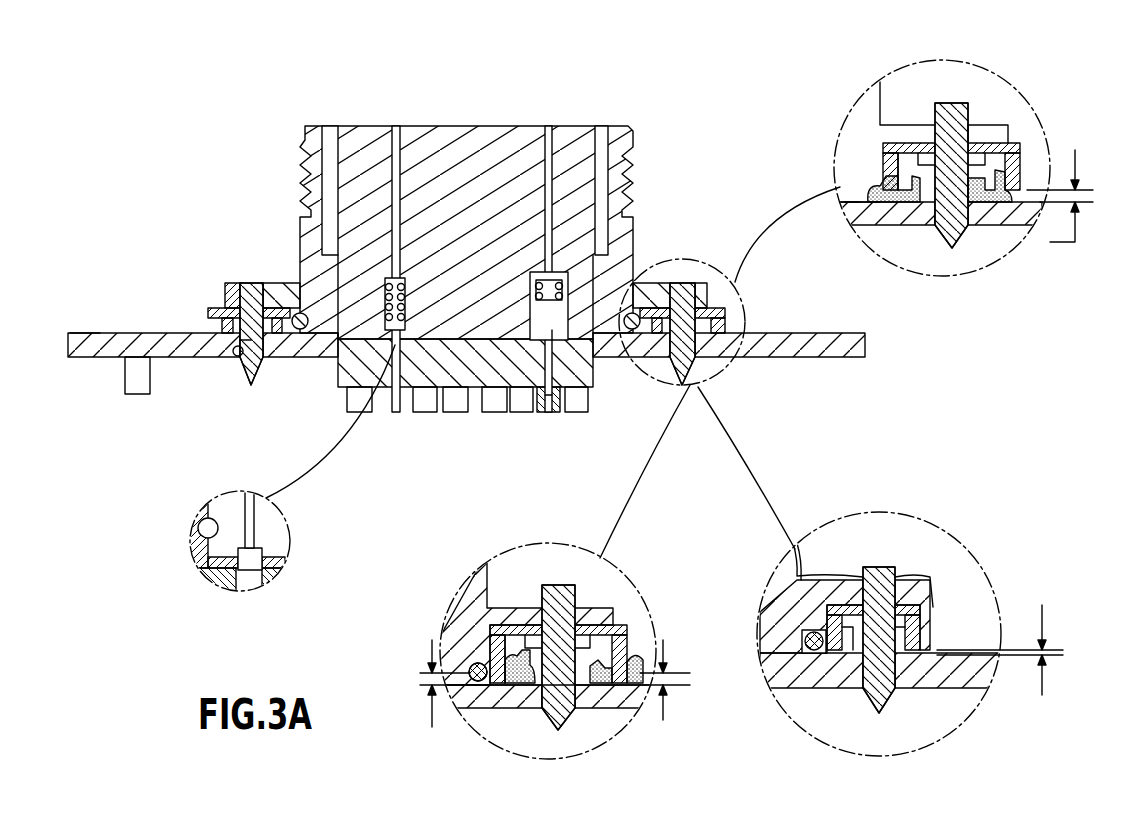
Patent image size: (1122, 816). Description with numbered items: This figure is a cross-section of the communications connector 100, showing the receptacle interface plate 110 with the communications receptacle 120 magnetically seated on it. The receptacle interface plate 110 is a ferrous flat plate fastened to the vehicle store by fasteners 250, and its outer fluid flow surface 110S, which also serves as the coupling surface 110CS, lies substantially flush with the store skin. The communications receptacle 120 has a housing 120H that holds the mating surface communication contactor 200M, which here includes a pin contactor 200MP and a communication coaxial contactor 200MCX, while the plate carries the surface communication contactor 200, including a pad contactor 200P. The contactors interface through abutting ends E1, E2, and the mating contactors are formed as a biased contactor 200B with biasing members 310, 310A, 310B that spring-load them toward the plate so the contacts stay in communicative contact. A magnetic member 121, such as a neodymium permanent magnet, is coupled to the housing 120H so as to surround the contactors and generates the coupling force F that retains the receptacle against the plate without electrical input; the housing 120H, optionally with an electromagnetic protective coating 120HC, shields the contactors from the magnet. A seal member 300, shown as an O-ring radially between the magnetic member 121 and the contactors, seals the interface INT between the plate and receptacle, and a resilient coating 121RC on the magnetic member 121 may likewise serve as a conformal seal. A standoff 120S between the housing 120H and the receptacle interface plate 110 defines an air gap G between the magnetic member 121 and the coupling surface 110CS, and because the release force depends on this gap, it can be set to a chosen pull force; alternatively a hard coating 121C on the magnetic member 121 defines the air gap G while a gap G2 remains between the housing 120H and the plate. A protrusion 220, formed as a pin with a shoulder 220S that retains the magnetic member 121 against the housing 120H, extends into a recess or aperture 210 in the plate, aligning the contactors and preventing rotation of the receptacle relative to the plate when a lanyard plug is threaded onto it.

The communications connector 100 is at (232, 118).
The receptacle interface plate 110 is at (1000, 214).
The fluid flow surface 110S is at (82, 332).
The coupling surface 110CS is at (842, 195).
The communications receptacle 120 is at (545, 125).
The housing 120H is at (983, 137).
The electromagnetic protective coating 120HC is at (912, 593).
The standoff 120S is at (860, 190).
The magnetic member 121 is at (212, 306).
The resilient coating 121RC is at (903, 193).
The coating 121C is at (507, 685).
The surface communication contactor 200 is at (572, 418).
The mating surface communication contactor 200M is at (370, 258).
The pin contactor 200MP is at (418, 292).
The communication coaxial contactor 200MCX is at (522, 292).
The biased contactor 200B is at (372, 290).
The pad contactor 200P is at (237, 546).
The recess or aperture 210 is at (245, 358).
The protrusion 220 is at (253, 368).
The shoulder 220S is at (232, 342).
The fasteners 250 is at (123, 378).
The seal member 300 is at (302, 330).
The biasing member 310 is at (382, 285).
The biasing member 310A is at (576, 352).
The biasing member 310B is at (568, 386).
The coupling force F is at (682, 282).
The air gap G is at (866, 435).
The gap G2 is at (546, 683).
The interface INT is at (196, 324).
The abutting end E1 is at (250, 559).
The abutting end E2 is at (249, 519).